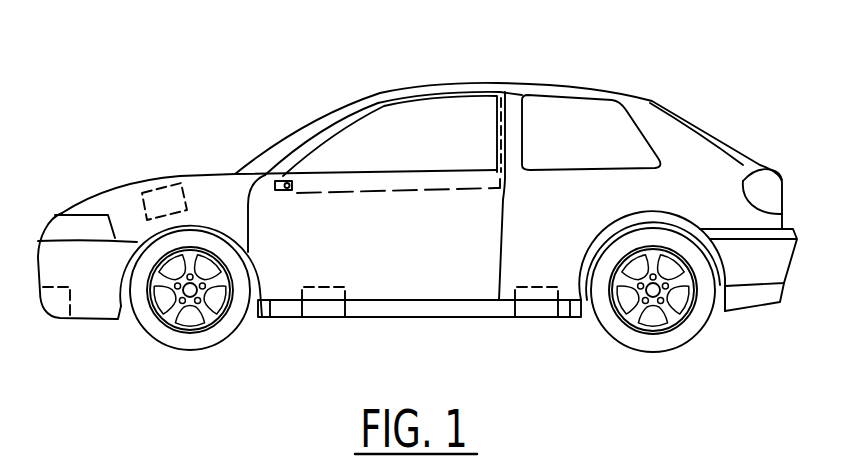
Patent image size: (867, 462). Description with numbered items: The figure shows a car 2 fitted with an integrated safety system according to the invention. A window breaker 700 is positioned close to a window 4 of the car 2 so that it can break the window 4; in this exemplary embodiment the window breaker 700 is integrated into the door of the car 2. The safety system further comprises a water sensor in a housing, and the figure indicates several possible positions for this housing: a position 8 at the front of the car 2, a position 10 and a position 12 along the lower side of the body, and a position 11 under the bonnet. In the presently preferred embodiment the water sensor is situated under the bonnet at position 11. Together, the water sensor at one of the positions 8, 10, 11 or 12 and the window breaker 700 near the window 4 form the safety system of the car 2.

The car 2 is at (728, 89).
The window 4 is at (400, 148).
The position 8 is at (58, 300).
The position 10 is at (322, 307).
The position 11 is at (165, 196).
The position 12 is at (542, 307).
The window breaker 700 is at (288, 190).